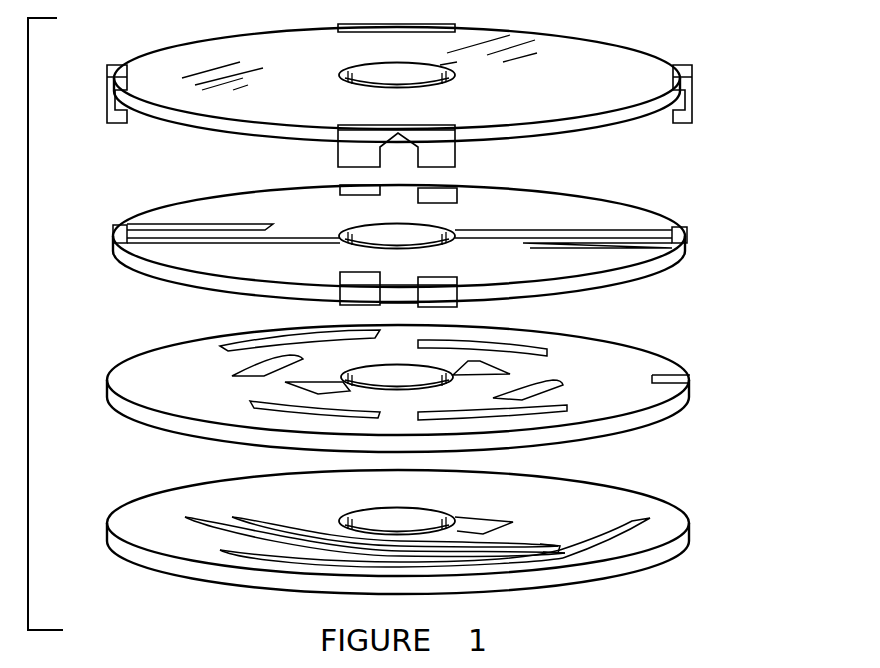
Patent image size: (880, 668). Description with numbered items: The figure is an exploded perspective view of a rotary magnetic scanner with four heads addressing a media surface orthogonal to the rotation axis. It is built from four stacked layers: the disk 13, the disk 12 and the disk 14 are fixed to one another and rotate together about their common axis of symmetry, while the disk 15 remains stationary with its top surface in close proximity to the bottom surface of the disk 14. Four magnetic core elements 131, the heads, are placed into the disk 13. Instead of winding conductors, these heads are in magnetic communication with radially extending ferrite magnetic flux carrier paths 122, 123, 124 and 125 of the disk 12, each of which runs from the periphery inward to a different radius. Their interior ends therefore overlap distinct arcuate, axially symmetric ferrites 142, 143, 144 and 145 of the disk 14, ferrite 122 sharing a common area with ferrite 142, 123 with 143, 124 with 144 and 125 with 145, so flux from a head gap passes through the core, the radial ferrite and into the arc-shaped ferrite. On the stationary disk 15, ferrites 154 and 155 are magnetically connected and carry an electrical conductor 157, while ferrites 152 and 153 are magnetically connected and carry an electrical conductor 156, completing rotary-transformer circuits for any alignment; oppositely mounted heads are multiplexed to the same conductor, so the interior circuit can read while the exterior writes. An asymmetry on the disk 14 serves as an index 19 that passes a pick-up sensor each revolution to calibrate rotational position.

The disk 13 is at (653, 48).
The magnetic core elements 131 is at (450, 24).
The disk 12 is at (637, 204).
The magnetic flux carrier path 122 is at (350, 186).
The magnetic flux carrier path 123 is at (340, 273).
The magnetic flux carrier path 124 is at (133, 222).
The magnetic flux carrier path 125 is at (657, 224).
The disk 14 is at (683, 363).
The ferrite 142 is at (220, 344).
The ferrite 143 is at (546, 352).
The ferrite 144 is at (233, 372).
The ferrite 145 is at (512, 374).
The index 19 is at (693, 380).
The disk 15 is at (652, 496).
The ferrite 152 is at (637, 537).
The ferrite 153 is at (545, 556).
The ferrite 154 is at (233, 513).
The ferrite 155 is at (485, 518).
The electrical conductor 156 is at (233, 548).
The electrical conductor 157 is at (322, 531).